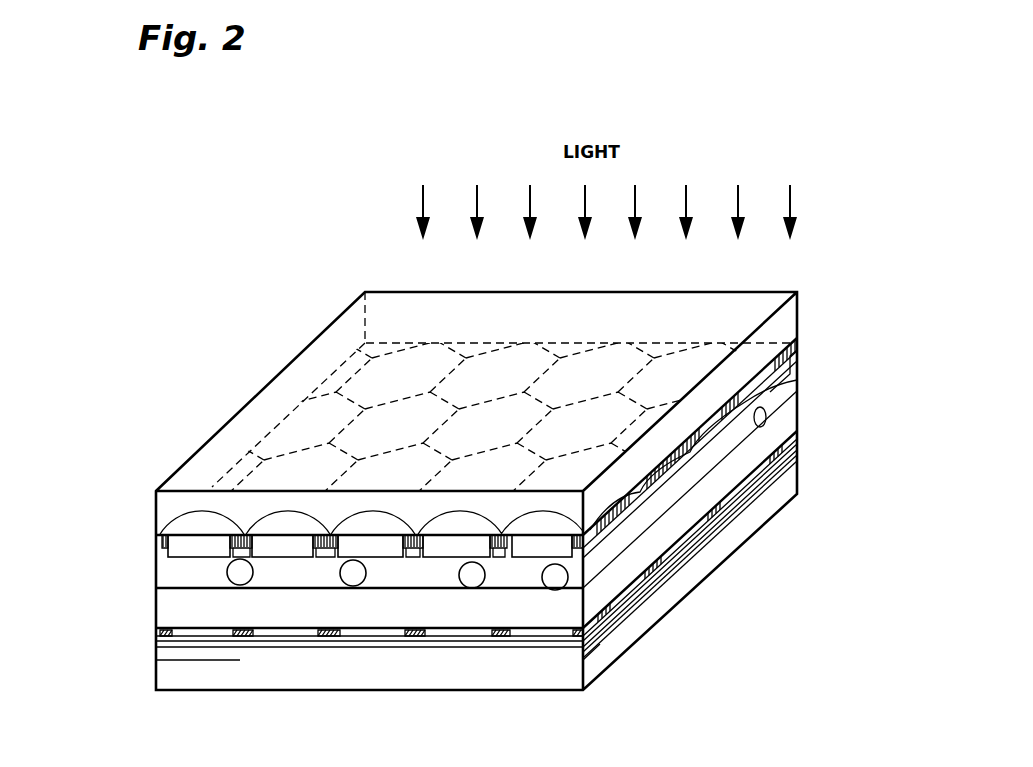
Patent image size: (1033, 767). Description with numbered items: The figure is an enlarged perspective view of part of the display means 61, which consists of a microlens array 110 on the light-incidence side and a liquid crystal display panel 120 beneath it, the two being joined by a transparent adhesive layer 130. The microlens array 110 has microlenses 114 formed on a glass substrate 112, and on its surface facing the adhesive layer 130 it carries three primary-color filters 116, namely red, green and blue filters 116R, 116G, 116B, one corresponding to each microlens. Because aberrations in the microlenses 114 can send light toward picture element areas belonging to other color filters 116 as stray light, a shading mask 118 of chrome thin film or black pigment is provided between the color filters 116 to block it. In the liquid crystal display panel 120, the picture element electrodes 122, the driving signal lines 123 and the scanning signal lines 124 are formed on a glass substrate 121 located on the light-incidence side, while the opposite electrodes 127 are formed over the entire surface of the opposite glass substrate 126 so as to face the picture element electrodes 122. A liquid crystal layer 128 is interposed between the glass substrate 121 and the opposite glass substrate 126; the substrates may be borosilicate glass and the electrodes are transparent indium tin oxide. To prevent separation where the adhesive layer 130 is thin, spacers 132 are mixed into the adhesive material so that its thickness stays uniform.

The display means 61 is at (282, 357).
The microlens array 110 is at (832, 285).
The glass substrate 112 is at (393, 291).
The microlenses 114 is at (283, 520).
The color filters 116 is at (96, 515).
The red color filter 116R is at (176, 560).
The green color filter 116G is at (250, 586).
The blue color filter 116B is at (336, 548).
The shading mask 118 is at (416, 540).
The liquid crystal display panel 120 is at (832, 392).
The glass substrate 121 is at (157, 615).
The picture element electrodes 122 is at (353, 639).
The driving signal lines 123 is at (507, 637).
The scanning signal lines 124 is at (722, 508).
The opposite glass substrate 126 is at (163, 668).
The opposite electrodes 127 is at (638, 606).
The liquid crystal layer 128 is at (608, 633).
The adhesive layer 130 is at (790, 384).
The spacers 132 is at (477, 584).